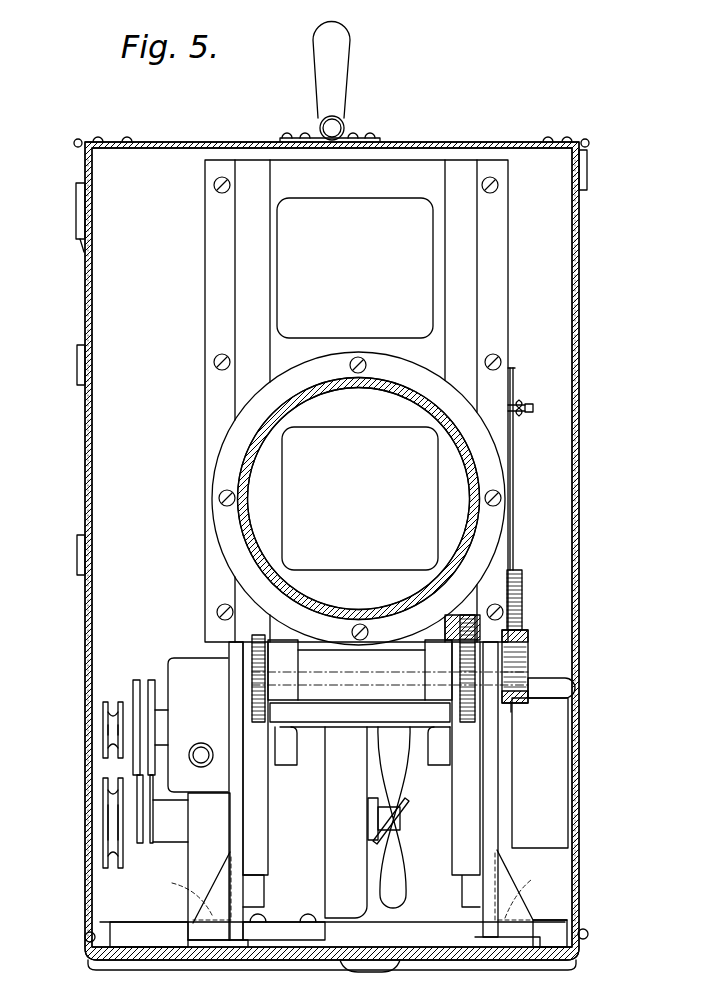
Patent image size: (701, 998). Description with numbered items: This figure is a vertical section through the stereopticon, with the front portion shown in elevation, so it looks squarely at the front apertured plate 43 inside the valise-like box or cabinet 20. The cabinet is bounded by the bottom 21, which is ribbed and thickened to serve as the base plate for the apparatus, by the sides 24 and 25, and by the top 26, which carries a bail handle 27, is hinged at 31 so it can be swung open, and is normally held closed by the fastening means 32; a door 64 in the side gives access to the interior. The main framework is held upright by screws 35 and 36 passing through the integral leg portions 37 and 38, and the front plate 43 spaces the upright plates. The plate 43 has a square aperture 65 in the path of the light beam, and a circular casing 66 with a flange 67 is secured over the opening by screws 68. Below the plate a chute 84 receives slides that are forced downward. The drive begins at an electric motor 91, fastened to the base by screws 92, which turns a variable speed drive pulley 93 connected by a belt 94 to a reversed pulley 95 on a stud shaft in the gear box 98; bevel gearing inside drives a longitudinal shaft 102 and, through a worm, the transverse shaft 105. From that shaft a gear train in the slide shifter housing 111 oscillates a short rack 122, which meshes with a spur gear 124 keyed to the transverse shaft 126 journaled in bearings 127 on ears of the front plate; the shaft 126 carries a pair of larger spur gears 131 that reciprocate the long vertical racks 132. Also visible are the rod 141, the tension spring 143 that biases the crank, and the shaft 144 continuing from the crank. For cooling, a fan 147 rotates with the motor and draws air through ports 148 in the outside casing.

The box or cabinet 20 is at (462, 141).
The bottom 21 is at (398, 962).
The side 24 is at (580, 412).
The side 25 is at (86, 292).
The top 26 is at (405, 139).
The bail handle 27 is at (350, 45).
The hinge 31 is at (585, 142).
The fastening means 32 is at (77, 213).
The screws 35 is at (185, 886).
The screws 36 is at (520, 890).
The leg portions 37 is at (205, 925).
The leg portions 38 is at (525, 905).
The front apertured plate 43 is at (470, 318).
The door 64 is at (86, 424).
The square aperture 65 is at (413, 479).
The circular casing 66 is at (243, 487).
The flange 67 is at (498, 530).
The screws 68 is at (358, 357).
The chute 84 is at (270, 855).
The electric motor 91 is at (347, 905).
The screws 92 is at (298, 932).
The variable speed drive pulley 93 is at (108, 812).
The belt 94 is at (148, 783).
The pulley 95 is at (112, 735).
The gear box 98 is at (192, 664).
The shaft 102 is at (201, 745).
The transverse shaft 105 is at (370, 712).
The housing 111 is at (555, 807).
The short rack 122 is at (522, 612).
The spur gear 124 is at (525, 670).
The transverse shaft 126 is at (346, 680).
The bearings 127 is at (297, 663).
The spur gears 131 is at (262, 725).
The racks 132 is at (452, 625).
The rod 141 is at (521, 400).
The tension spring 143 is at (527, 412).
The shaft 144 is at (513, 370).
The fan 147 is at (400, 792).
The ports 148 is at (532, 405).